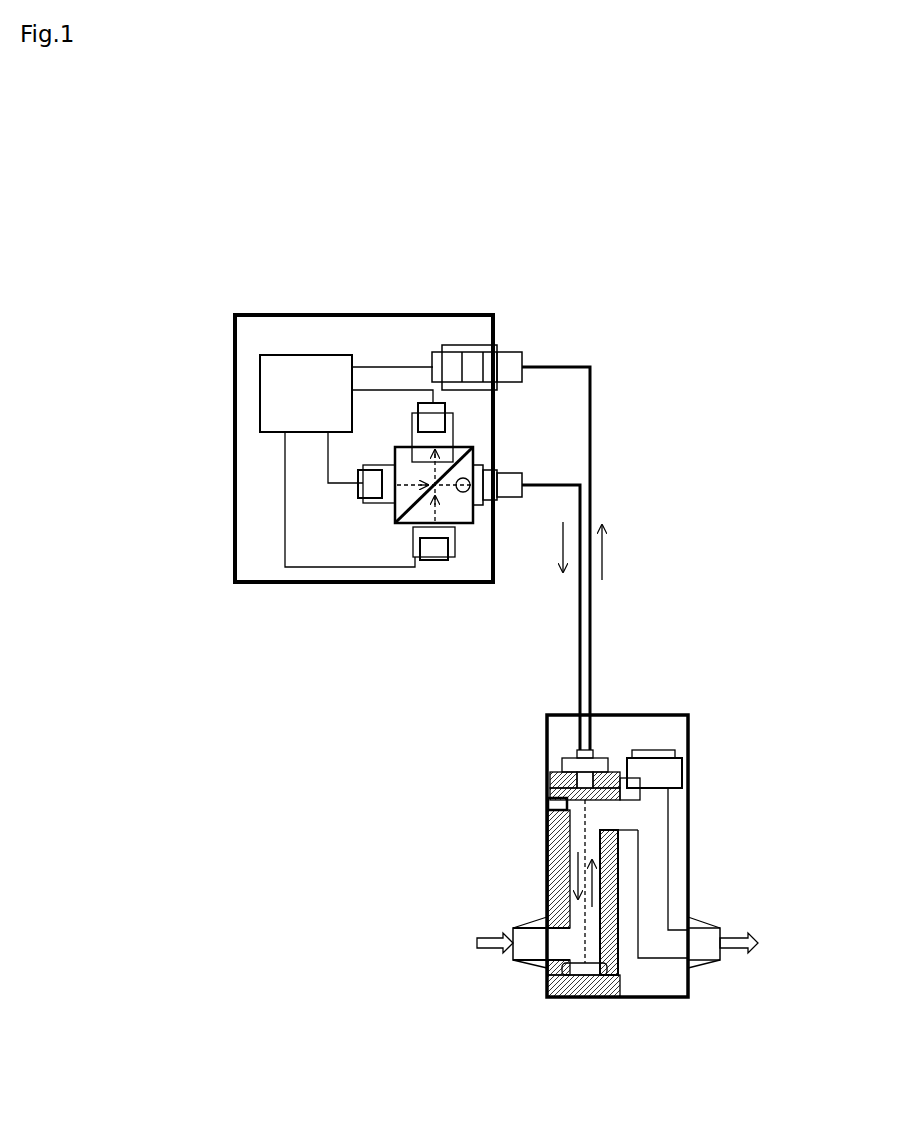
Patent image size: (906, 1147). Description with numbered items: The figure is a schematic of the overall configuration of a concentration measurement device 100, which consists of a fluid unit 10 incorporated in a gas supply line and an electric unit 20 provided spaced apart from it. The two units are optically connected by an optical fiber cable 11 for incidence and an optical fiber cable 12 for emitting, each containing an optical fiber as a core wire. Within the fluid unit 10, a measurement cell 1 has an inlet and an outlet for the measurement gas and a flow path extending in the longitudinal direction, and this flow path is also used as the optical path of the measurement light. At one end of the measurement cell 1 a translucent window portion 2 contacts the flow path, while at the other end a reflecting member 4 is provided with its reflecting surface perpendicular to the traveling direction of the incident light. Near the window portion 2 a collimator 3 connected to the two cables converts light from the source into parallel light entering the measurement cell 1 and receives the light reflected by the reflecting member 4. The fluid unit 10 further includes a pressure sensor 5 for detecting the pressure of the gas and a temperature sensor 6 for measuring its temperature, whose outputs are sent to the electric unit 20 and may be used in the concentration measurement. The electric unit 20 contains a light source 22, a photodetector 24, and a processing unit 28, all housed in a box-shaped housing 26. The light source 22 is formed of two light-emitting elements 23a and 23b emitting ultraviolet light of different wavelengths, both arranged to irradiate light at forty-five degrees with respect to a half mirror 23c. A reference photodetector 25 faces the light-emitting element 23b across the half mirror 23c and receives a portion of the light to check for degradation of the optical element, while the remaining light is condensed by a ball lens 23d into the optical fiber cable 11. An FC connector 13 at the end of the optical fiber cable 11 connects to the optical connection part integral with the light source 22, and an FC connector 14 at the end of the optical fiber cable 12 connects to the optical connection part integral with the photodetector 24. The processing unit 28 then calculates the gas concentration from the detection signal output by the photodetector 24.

The concentration measurement device 100 is at (660, 316).
The electric unit 20 is at (382, 312).
The processing unit 28 is at (260, 383).
The light source 22 is at (400, 532).
The light-emitting element 23a is at (432, 550).
The light-emitting element 23b is at (362, 487).
The half mirror 23c is at (396, 512).
The ball lens 23d is at (462, 493).
The reference photodetector 25 is at (430, 408).
The photodetector 24 is at (467, 338).
The housing 26 is at (494, 328).
The FC connector 14 is at (513, 365).
The FC connector 13 is at (512, 485).
The optical fiber cable for incidence 11 is at (577, 627).
The optical fiber cable for emitting 12 is at (595, 625).
The fluid unit 10 is at (690, 713).
The collimator 3 is at (577, 757).
The window portion 2 is at (552, 778).
The temperature sensor 6 is at (548, 803).
The measurement cell 1 is at (548, 838).
The pressure sensor 5 is at (660, 772).
The reflecting member 4 is at (598, 997).